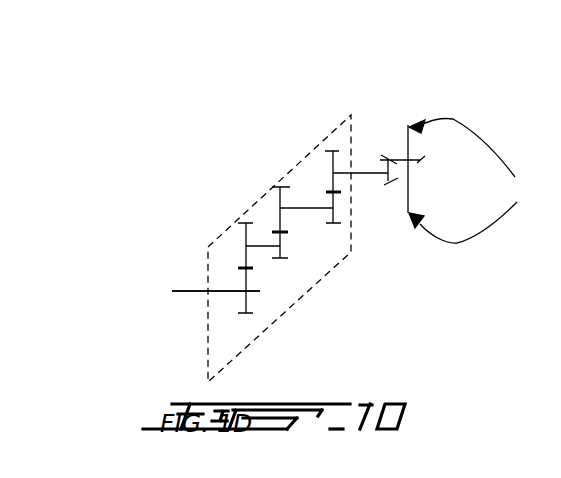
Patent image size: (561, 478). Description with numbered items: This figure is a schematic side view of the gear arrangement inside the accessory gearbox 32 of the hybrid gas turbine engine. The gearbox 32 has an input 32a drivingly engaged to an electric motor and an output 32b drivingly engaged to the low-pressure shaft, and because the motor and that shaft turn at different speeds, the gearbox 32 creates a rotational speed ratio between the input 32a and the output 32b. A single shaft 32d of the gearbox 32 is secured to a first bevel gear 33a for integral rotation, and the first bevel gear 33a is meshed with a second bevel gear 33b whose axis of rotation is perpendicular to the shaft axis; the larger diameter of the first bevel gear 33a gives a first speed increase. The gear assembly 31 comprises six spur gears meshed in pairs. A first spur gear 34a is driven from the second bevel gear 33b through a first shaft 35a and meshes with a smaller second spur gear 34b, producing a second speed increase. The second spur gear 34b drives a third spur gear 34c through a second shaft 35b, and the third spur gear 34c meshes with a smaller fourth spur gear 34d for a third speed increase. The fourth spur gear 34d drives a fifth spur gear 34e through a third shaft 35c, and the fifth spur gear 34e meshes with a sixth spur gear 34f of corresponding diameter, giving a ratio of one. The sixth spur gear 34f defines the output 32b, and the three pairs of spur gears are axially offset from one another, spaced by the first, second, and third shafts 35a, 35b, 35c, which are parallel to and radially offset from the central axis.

The gear assembly 31 is at (351, 116).
The gearbox 32 is at (200, 126).
The input 32a is at (479, 180).
The output 32b is at (187, 291).
The single shaft 32d is at (409, 202).
The first bevel gear 33a is at (400, 160).
The second bevel gear 33b is at (390, 177).
The first spur gear 34a is at (331, 162).
The second spur gear 34b is at (336, 214).
The third spur gear 34c is at (281, 212).
The fourth spur gear 34d is at (283, 257).
The fifth spur gear 34e is at (243, 240).
The sixth spur gear 34f is at (243, 301).
The first shaft 35a is at (363, 173).
The second shaft 35b is at (300, 208).
The third shaft 35c is at (265, 246).